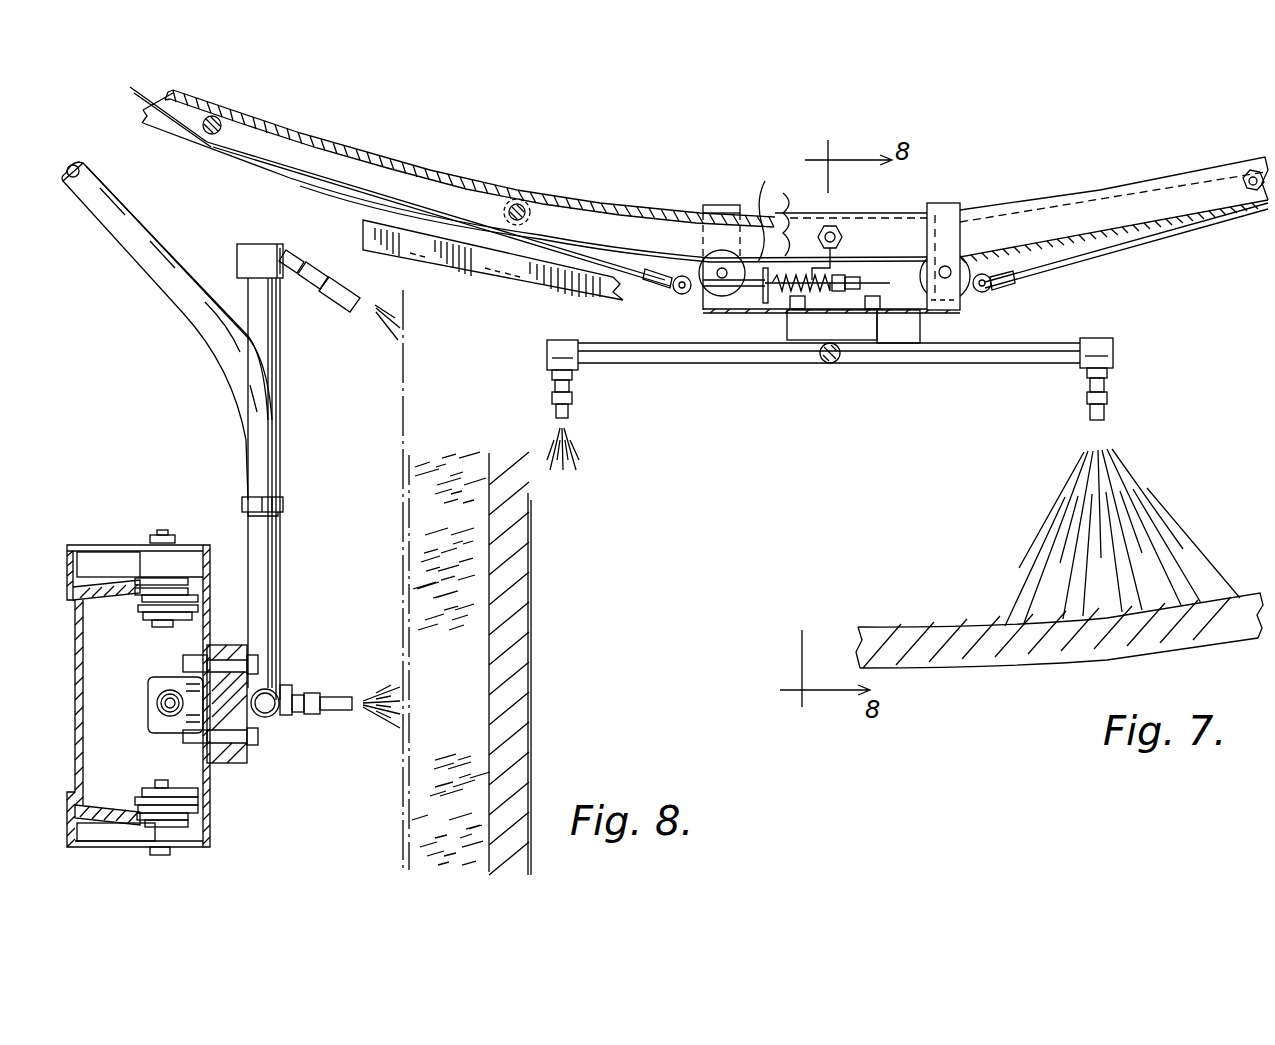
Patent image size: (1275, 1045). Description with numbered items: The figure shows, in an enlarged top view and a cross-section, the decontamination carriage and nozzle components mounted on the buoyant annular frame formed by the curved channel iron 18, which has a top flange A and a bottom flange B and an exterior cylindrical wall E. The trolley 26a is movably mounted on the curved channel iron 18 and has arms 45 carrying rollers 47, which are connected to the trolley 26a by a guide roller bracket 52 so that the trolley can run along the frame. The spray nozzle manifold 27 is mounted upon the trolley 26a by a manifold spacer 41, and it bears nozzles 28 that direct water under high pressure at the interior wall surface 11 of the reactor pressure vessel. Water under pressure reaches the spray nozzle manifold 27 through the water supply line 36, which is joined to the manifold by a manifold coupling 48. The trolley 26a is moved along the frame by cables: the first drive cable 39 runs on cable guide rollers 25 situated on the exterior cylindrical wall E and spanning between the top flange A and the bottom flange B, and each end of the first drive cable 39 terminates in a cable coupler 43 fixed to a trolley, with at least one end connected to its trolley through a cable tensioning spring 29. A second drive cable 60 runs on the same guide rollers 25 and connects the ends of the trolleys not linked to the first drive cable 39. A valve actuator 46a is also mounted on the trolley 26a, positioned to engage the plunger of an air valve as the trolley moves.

In FIG. 7, the interior wall surface 11 is at (923, 620).
In FIG. 8, the interior wall surface 11 is at (486, 687).
In FIG. 7, the curved channel iron 18 is at (460, 178).
In FIG. 7, the cable guide rollers 25 is at (235, 128).
In FIG. 7, the trolley 26a is at (925, 320).
In FIG. 8, the trolley 26a is at (225, 815).
In FIG. 7, the spray nozzle manifold 27 is at (830, 365).
In FIG. 8, the spray nozzle manifold 27 is at (283, 378).
In FIG. 7, the nozzles 28 is at (578, 412).
In FIG. 8, the nozzles 28 is at (337, 300).
In FIG. 7, the cable tensioning spring 29 is at (768, 232).
In FIG. 8, the cable tensioning spring 29 is at (153, 700).
In FIG. 8, the water supply line 36 is at (132, 238).
In FIG. 7, the first drive cable 39 is at (283, 163).
In FIG. 7, the manifold spacer 41 is at (787, 323).
In FIG. 8, the manifold spacer 41 is at (235, 763).
In FIG. 7, the cable coupler 43 is at (683, 303).
In FIG. 7, the arms 45 is at (722, 205).
In FIG. 8, the arms 45 is at (97, 543).
In FIG. 7, the valve actuator 46a is at (460, 277).
In FIG. 7, the rollers 47 is at (700, 265).
In FIG. 8, the rollers 47 is at (183, 600).
In FIG. 8, the manifold coupling 48 is at (290, 503).
In FIG. 8, the guide roller bracket 52 is at (143, 613).
In FIG. 7, the second drive cable 60 is at (1100, 253).
In FIG. 7, the top flange A is at (1133, 212).
In FIG. 7, the bottom flange B is at (173, 128).
In FIG. 7, the exterior cylindrical wall E is at (386, 175).